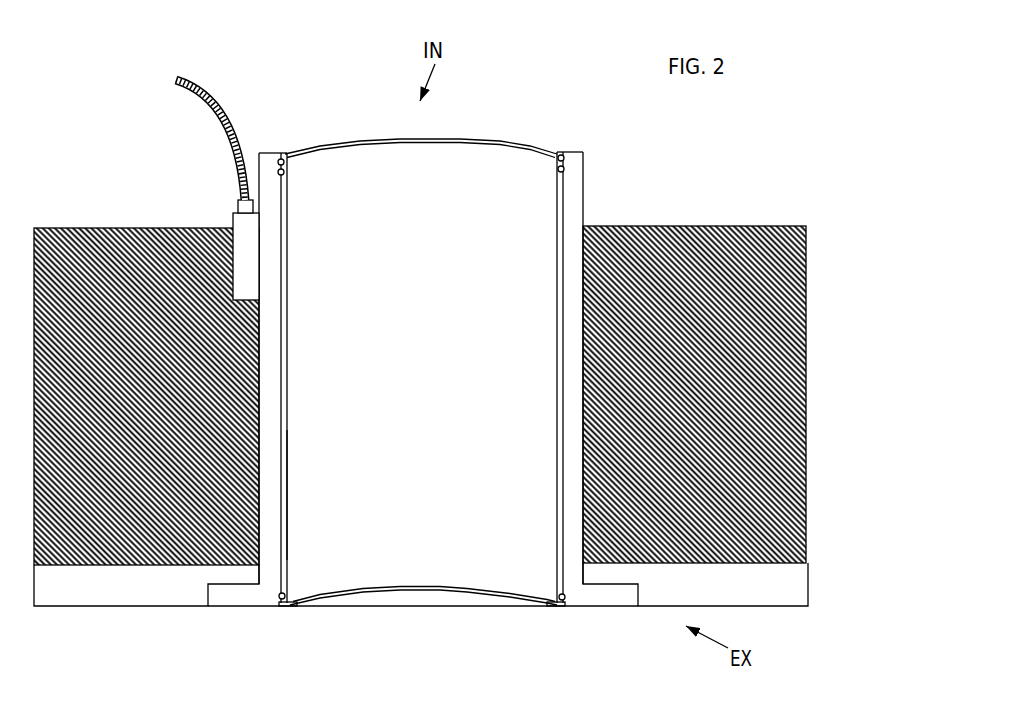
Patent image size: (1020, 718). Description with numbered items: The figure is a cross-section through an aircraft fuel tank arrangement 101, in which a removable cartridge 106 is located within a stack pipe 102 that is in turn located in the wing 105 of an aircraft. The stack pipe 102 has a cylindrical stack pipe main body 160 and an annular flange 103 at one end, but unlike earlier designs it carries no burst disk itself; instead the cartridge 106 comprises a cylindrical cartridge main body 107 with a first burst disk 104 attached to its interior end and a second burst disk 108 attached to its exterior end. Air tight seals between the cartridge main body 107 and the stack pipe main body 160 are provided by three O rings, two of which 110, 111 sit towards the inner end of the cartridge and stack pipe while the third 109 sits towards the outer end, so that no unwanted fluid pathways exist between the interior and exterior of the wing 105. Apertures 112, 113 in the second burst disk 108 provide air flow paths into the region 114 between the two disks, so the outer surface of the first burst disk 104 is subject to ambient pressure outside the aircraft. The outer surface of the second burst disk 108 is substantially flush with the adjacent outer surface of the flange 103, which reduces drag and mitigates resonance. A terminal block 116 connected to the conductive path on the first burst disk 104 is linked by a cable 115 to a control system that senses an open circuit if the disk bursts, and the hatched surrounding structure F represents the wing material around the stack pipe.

The aircraft fuel tank arrangement 101 is at (263, 101).
The stack pipe 102 is at (268, 366).
The annular flange 103 is at (603, 600).
The first burst disk 104 is at (531, 142).
The wing 105 is at (116, 607).
The removable cartridge 106 is at (290, 425).
The cartridge main body 107 is at (290, 503).
The second burst disk 108 is at (418, 581).
The O ring 109 is at (278, 601).
The O ring 110 is at (567, 157).
The O ring 111 is at (567, 170).
The aperture 112 is at (293, 611).
The aperture 113 is at (553, 610).
The region 114 is at (375, 209).
The cable 115 is at (229, 176).
The terminal block 116 is at (246, 237).
The stack pipe main body 160 is at (281, 457).
The filter body F is at (685, 258).